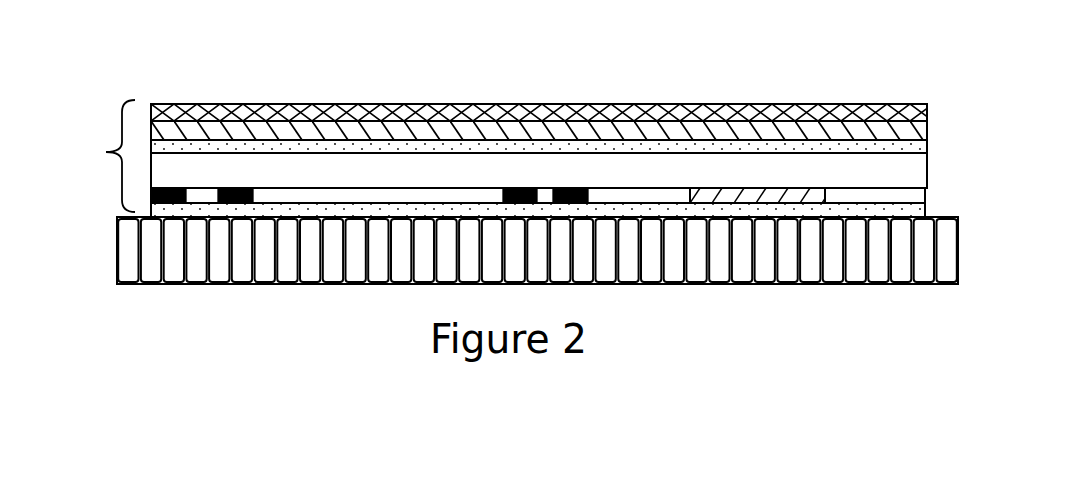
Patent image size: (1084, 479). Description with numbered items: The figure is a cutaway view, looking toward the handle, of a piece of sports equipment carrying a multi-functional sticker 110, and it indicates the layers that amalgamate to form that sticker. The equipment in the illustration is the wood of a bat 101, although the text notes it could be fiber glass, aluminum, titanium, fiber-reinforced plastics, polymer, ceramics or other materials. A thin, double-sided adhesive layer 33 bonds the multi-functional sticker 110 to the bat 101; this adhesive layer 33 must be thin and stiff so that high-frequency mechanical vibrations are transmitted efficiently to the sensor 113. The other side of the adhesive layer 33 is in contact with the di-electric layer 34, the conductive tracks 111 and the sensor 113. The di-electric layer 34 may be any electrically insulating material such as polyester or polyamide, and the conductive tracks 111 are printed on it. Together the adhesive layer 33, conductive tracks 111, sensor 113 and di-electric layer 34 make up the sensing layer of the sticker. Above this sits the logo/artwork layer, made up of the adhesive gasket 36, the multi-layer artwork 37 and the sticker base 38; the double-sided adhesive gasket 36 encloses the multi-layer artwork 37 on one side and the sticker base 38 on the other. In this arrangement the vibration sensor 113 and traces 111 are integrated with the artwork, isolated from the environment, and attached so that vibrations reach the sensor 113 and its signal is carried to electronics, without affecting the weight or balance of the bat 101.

The multi-functional sticker 110 is at (103, 138).
The sticker base 38 is at (248, 110).
The multi-layer artwork 37 is at (347, 126).
The adhesive gasket 36 is at (445, 152).
The di-electric layer 34 is at (505, 168).
The conductive tracks 111 is at (583, 186).
The sensor 113 is at (741, 187).
The adhesive layer 33 is at (627, 210).
The bat 101 is at (817, 243).